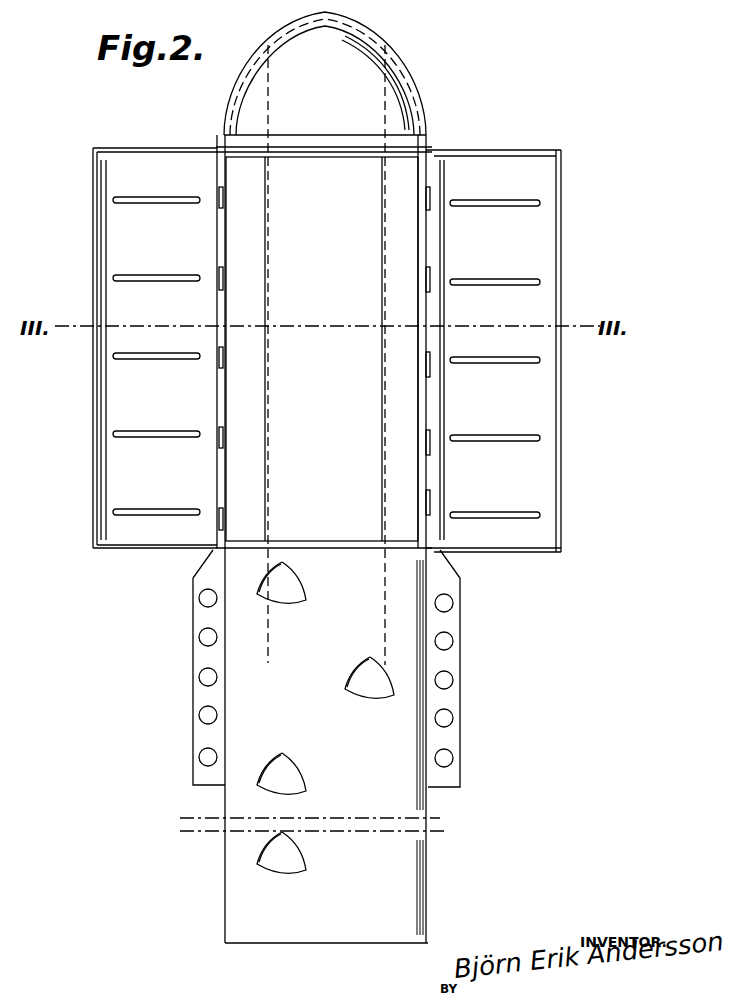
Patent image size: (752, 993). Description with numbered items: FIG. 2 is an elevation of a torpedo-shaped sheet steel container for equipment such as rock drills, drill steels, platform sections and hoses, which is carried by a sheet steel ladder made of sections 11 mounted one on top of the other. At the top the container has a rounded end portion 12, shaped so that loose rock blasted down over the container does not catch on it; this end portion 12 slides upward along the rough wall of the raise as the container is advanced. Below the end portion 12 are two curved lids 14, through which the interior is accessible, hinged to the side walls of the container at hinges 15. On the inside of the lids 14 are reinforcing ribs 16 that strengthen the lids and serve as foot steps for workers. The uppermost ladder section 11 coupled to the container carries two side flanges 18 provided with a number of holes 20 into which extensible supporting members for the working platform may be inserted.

The ladder section 11 is at (235, 732).
The rounded end portion 12 is at (372, 105).
The lid 14 is at (112, 412).
The hinge 15 is at (223, 345).
The reinforcing rib 16 is at (113, 278).
The side flange 18 is at (205, 655).
The hole 20 is at (206, 600).